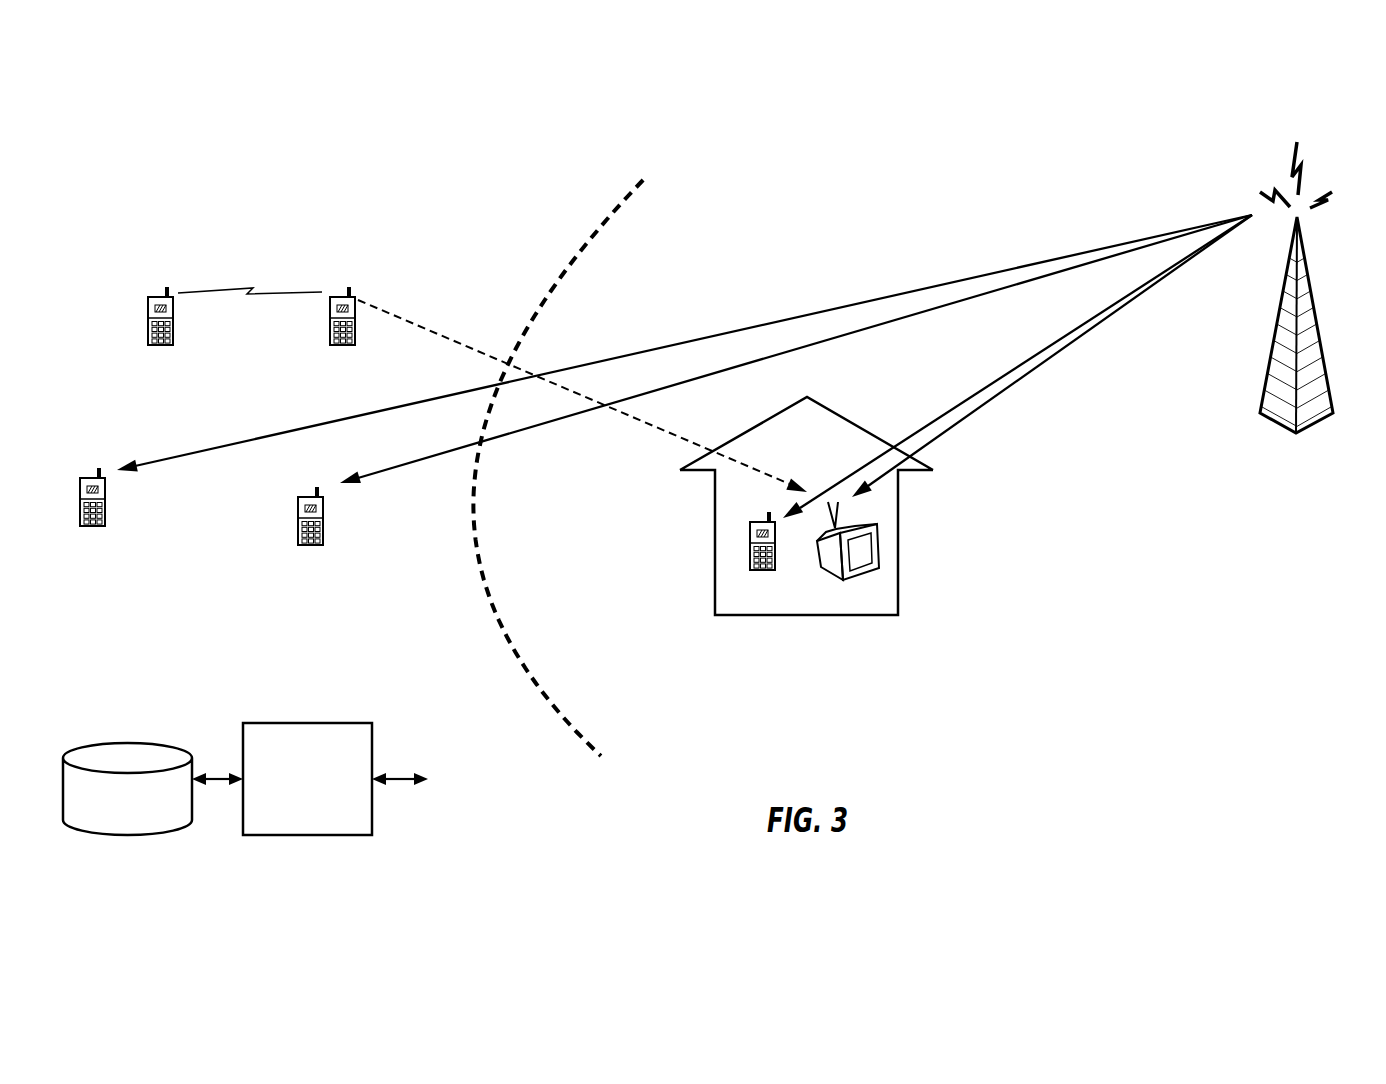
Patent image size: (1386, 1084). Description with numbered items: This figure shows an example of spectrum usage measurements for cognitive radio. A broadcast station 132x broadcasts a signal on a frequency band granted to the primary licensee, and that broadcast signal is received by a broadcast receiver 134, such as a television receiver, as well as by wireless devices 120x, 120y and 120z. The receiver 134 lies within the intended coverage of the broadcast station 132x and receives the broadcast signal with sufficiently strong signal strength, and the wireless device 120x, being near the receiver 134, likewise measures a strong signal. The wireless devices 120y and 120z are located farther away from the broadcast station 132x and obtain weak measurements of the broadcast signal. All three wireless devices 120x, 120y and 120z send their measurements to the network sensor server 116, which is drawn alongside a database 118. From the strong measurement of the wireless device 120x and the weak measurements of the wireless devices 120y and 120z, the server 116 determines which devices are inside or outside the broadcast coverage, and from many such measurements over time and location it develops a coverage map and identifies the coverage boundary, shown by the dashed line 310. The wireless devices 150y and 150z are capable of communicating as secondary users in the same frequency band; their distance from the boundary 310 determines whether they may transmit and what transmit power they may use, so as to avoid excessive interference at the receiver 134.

The line 310 is at (574, 249).
The broadcast station 132x is at (1318, 335).
The wireless device 150z is at (157, 297).
The wireless device 150y is at (340, 297).
The wireless device 120z is at (89, 478).
The wireless device 120y is at (307, 497).
The wireless device 120x is at (750, 565).
The broadcast receiver 134 is at (828, 569).
The database 118 is at (122, 742).
The network sensor server 116 is at (302, 723).